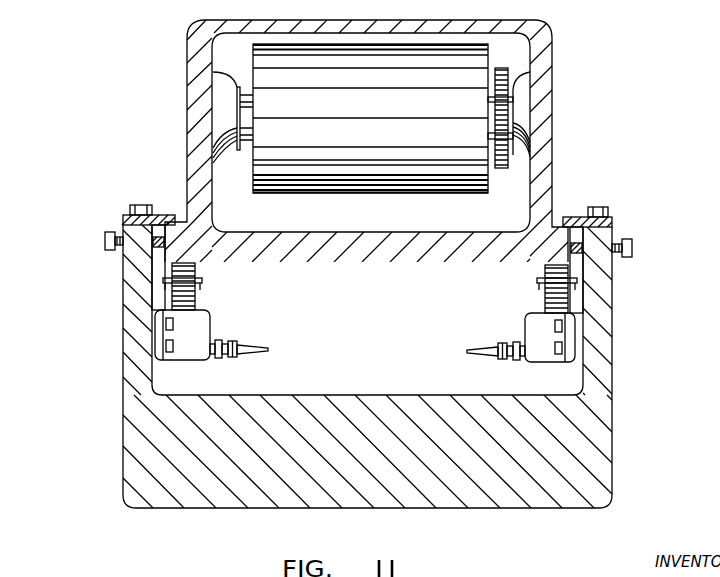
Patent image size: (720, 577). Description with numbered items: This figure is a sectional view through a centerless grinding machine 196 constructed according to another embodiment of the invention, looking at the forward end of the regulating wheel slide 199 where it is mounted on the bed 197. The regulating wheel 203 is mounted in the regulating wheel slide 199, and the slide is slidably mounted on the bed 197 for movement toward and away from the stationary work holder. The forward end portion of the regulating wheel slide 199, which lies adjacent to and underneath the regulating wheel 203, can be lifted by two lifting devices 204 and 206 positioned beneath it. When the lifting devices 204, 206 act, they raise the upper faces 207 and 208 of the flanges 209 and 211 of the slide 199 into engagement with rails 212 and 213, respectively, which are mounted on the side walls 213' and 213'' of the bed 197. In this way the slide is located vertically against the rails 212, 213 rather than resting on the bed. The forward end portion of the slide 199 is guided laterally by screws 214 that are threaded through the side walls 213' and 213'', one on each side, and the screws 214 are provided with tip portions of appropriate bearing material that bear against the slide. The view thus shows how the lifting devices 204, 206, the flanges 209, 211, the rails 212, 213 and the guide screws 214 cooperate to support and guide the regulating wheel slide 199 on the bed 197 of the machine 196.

The centerless grinding machine 196 is at (550, 538).
The bed 197 is at (605, 468).
The regulating wheel slide 199 is at (547, 57).
The regulating wheel 203 is at (403, 157).
The lifting device 204 is at (195, 328).
The lifting device 206 is at (530, 331).
The upper face 207 is at (184, 214).
The upper face 208 is at (564, 217).
The flange 209 is at (125, 312).
The flange 211 is at (553, 249).
The rail 212 is at (125, 217).
The rail 213 is at (608, 200).
The side wall 213' is at (105, 267).
The side wall 213'' is at (637, 311).
The screw 214 is at (105, 241).